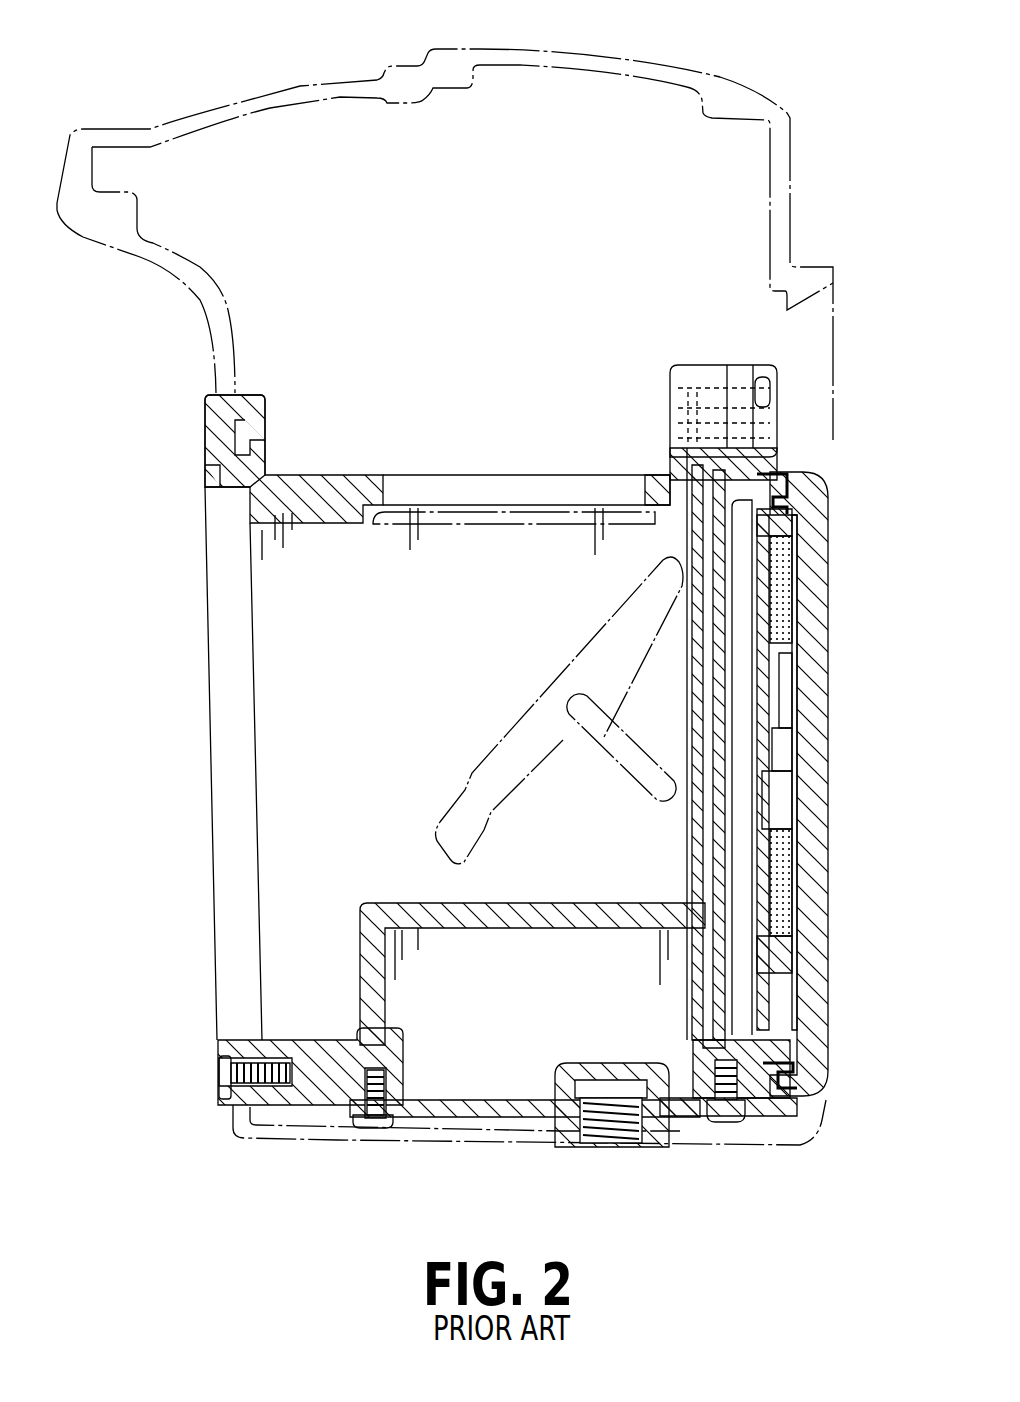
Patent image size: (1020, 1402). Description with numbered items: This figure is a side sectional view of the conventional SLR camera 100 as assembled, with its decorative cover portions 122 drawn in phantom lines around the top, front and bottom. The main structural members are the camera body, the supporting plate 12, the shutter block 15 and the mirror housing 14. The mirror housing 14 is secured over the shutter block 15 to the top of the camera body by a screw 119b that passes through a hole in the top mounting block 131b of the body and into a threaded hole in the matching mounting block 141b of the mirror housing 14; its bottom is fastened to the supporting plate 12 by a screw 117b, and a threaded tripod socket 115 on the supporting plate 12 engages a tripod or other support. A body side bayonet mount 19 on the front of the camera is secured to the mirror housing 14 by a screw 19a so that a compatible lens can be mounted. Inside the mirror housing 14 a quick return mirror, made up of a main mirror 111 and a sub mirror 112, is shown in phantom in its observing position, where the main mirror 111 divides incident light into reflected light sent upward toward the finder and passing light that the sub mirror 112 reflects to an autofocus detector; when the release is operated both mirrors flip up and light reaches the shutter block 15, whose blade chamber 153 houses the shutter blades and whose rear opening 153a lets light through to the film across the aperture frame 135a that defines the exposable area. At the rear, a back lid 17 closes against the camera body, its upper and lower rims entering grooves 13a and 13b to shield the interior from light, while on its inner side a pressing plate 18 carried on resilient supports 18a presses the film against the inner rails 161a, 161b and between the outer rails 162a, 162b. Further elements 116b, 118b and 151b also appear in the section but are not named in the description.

The camera 100 is at (712, 60).
The decorative cover portions 122 is at (412, 62).
The supporting plate 12 is at (485, 1118).
The groove 13a is at (790, 464).
The groove 13b is at (773, 1113).
The mirror housing 14 is at (360, 932).
The shutter block 15 is at (692, 1052).
The back lid 17 is at (812, 702).
The pressing plate 18 is at (772, 762).
The supports 18a is at (795, 833).
The body side bayonet mount 19 is at (210, 440).
The screw 19a is at (220, 1062).
The main mirror 111 is at (600, 636).
The sub mirror 112 is at (640, 777).
The threaded tripod socket 115 is at (645, 1135).
The screw 116b is at (726, 1122).
The screw 117b is at (380, 1128).
The shaft 118b is at (690, 420).
The screw 119b is at (766, 408).
The top mounting block 131b is at (740, 368).
The aperture frame 135a is at (798, 862).
The matching mounting block 141b is at (693, 372).
The thin plate 151b is at (693, 447).
The blade chamber 153 is at (722, 990).
The opening 153a is at (706, 880).
The inner rail 161a is at (781, 605).
The inner rail 161b is at (781, 915).
The outer rail 162a is at (776, 560).
The outer rail 162b is at (762, 963).